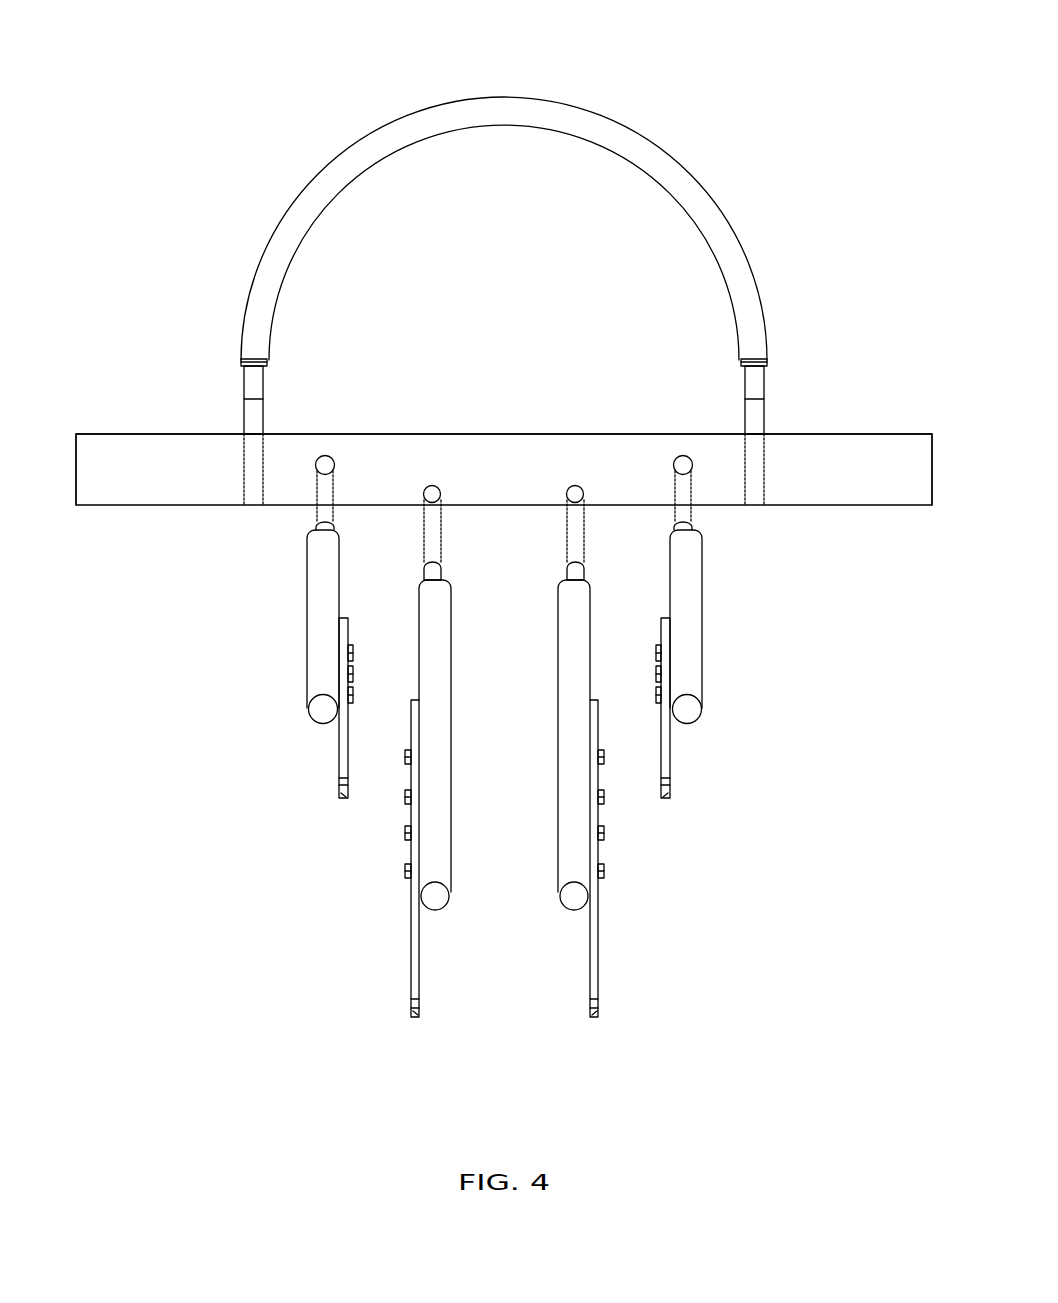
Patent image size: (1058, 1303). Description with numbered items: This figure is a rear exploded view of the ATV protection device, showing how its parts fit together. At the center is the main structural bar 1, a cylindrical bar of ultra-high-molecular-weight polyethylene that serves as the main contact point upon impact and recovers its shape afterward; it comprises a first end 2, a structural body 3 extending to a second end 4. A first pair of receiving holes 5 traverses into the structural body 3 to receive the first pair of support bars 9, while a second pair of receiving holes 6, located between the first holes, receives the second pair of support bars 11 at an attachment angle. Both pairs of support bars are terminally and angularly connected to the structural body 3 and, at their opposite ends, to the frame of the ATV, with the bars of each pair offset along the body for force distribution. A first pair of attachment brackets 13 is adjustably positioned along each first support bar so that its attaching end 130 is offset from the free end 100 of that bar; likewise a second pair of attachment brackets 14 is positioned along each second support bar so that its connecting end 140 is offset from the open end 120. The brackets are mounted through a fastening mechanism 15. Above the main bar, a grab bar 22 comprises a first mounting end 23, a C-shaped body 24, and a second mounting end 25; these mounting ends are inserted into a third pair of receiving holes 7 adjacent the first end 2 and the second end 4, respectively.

The main structural bar 1 is at (107, 405).
The first end 2 is at (932, 495).
The structural body 3 is at (179, 488).
The second end 4 is at (76, 487).
The first pair of receiving holes 5 is at (342, 468).
The second pair of receiving holes 6 is at (450, 495).
The third pair of receiving holes 7 is at (258, 437).
The first pair of support bars 9 is at (317, 592).
The second pair of support bars 11 is at (433, 796).
The first pair of attachment brackets 13 is at (343, 753).
The second pair of attachment brackets 14 is at (417, 932).
The fastening mechanism 15 is at (368, 634).
The grab bar 22 is at (540, 222).
The first mounting end 23 is at (757, 389).
The C-shaped body 24 is at (492, 122).
The second mounting end 25 is at (258, 376).
The free end 100 is at (330, 697).
The open end 120 is at (442, 895).
The attaching end 130 is at (335, 800).
The connecting end 140 is at (415, 1013).